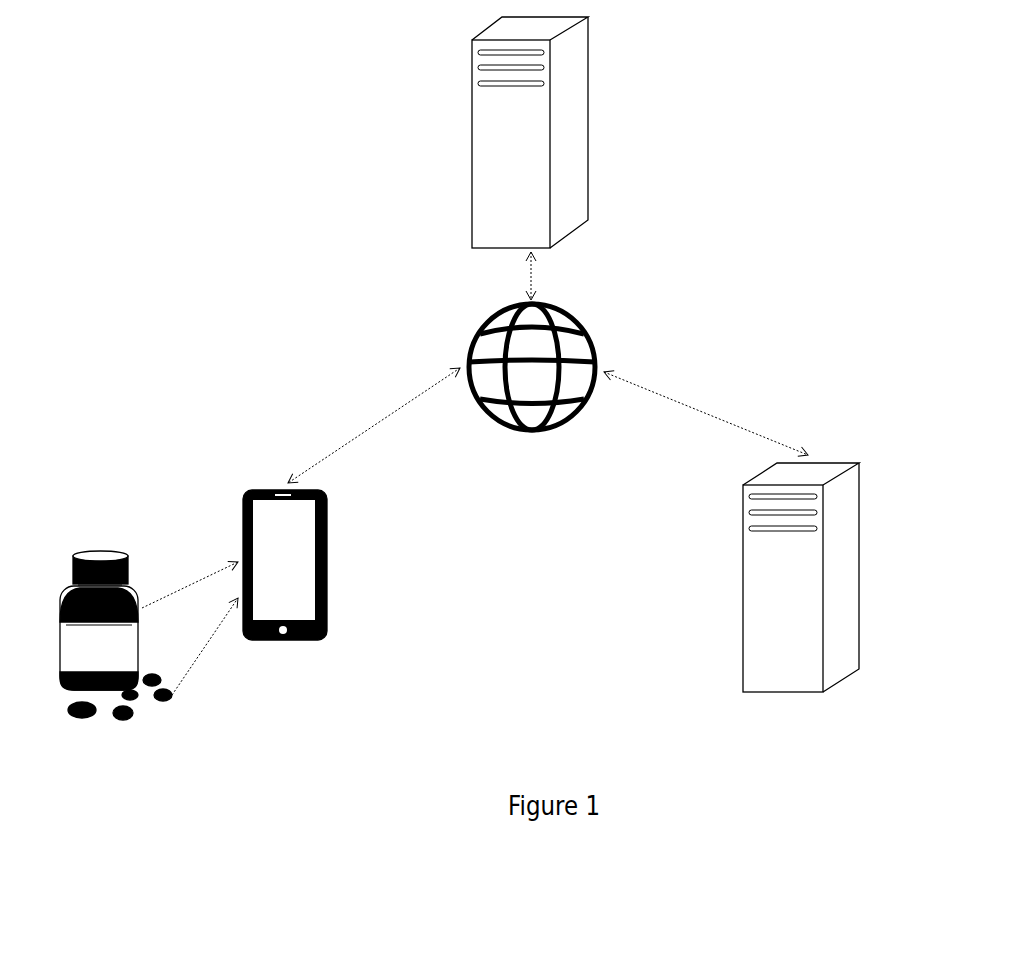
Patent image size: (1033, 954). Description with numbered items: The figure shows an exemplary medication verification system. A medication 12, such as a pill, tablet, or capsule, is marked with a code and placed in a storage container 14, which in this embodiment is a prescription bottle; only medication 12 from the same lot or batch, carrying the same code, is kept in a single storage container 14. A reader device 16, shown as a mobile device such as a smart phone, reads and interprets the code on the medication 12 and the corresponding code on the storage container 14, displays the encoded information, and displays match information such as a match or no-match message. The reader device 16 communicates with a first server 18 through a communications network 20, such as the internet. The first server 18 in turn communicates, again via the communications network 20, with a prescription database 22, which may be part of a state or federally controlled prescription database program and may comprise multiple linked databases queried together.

The medication 12 is at (163, 723).
The storage container 14 is at (93, 550).
The reader device 16 is at (248, 490).
The first server 18 is at (472, 139).
The communications network 20 is at (588, 326).
The prescription database 22 is at (862, 585).